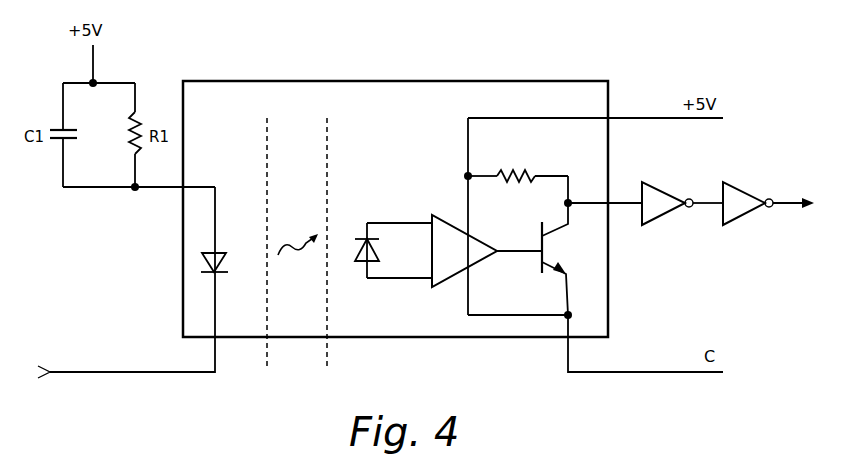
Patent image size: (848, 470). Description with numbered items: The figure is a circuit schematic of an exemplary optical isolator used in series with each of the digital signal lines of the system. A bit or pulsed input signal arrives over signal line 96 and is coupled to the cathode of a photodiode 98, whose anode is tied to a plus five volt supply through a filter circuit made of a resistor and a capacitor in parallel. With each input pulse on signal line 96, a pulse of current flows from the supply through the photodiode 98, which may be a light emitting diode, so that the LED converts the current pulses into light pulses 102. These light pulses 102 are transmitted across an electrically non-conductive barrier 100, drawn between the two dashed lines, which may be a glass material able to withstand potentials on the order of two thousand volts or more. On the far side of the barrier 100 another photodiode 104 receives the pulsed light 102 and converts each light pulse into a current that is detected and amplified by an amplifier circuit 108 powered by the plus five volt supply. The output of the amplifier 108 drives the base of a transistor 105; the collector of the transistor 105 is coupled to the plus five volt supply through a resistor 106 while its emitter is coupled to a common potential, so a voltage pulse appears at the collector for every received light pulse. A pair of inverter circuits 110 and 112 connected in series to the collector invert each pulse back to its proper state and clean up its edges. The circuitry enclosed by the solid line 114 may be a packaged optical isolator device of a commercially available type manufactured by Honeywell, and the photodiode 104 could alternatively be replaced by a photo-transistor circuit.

The signal line 96 is at (147, 372).
The photodiode 98 is at (232, 256).
The electrically non-conductive barrier 100 is at (313, 200).
The light pulses 102 is at (290, 262).
The photodiode 104 is at (385, 252).
The transistor 105 is at (538, 257).
The resistor 106 is at (516, 171).
The amplifier circuit 108 is at (447, 218).
The inverter circuit 110 is at (665, 217).
The inverter circuit 112 is at (740, 221).
The solid line 114 is at (443, 338).